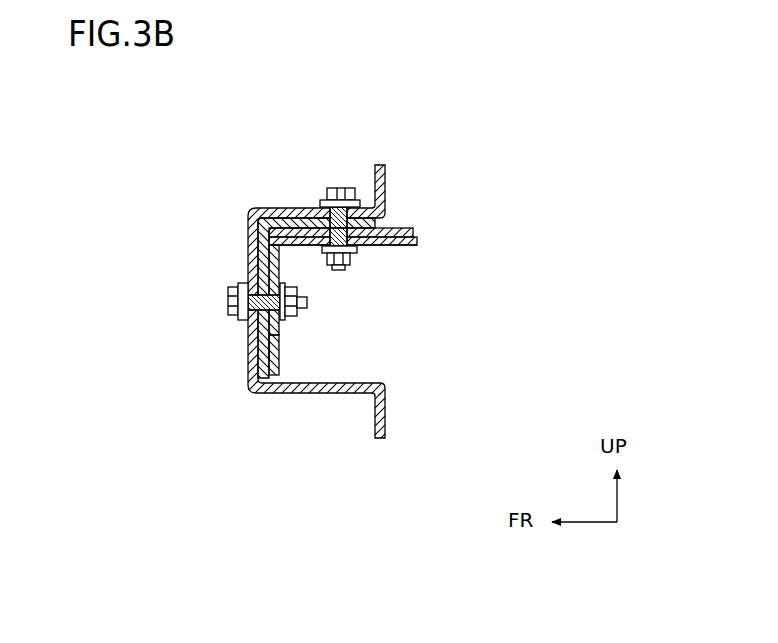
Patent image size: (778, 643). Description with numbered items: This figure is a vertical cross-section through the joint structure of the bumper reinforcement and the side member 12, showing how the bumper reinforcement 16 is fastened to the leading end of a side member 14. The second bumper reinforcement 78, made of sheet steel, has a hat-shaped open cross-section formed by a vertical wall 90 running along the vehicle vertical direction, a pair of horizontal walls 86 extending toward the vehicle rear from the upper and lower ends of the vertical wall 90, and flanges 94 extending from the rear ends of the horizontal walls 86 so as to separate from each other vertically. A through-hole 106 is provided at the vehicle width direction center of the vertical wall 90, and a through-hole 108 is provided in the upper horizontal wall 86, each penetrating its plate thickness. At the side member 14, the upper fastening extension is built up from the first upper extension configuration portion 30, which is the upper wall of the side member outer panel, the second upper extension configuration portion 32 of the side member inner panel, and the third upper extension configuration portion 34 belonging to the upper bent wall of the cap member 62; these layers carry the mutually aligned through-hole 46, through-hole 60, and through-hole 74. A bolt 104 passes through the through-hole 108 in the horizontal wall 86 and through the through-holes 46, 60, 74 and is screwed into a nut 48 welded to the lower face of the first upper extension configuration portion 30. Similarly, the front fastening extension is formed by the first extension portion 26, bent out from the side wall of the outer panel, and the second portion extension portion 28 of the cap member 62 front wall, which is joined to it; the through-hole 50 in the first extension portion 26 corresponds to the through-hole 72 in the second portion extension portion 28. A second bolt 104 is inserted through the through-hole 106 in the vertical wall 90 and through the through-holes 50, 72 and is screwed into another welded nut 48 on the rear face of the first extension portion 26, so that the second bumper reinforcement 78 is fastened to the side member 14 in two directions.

The joint structure of the bumper reinforcement and the side member 12 is at (393, 223).
The side member 14 is at (406, 253).
The bumper reinforcement 16 is at (316, 268).
The first extension portion 26 is at (280, 368).
The second portion extension portion 28 is at (274, 329).
The first upper extension configuration portion 30 is at (386, 248).
The second upper extension configuration portion 32 is at (398, 228).
The third upper extension configuration portion 34 is at (393, 212).
The through-hole 46 is at (358, 255).
The nut 48 is at (323, 253).
The through-hole 50 is at (298, 289).
The through-hole 60 is at (358, 263).
The cap member 62 is at (278, 344).
The through-hole 72 is at (299, 315).
The through-hole 74 is at (321, 203).
The second bumper reinforcement 78 is at (370, 174).
The horizontal wall 86 is at (273, 207).
The vertical wall 90 is at (249, 262).
The flange 94 is at (387, 178).
The bolt 104 is at (327, 190).
The through-hole 106 is at (236, 288).
The through-hole 108 is at (339, 200).